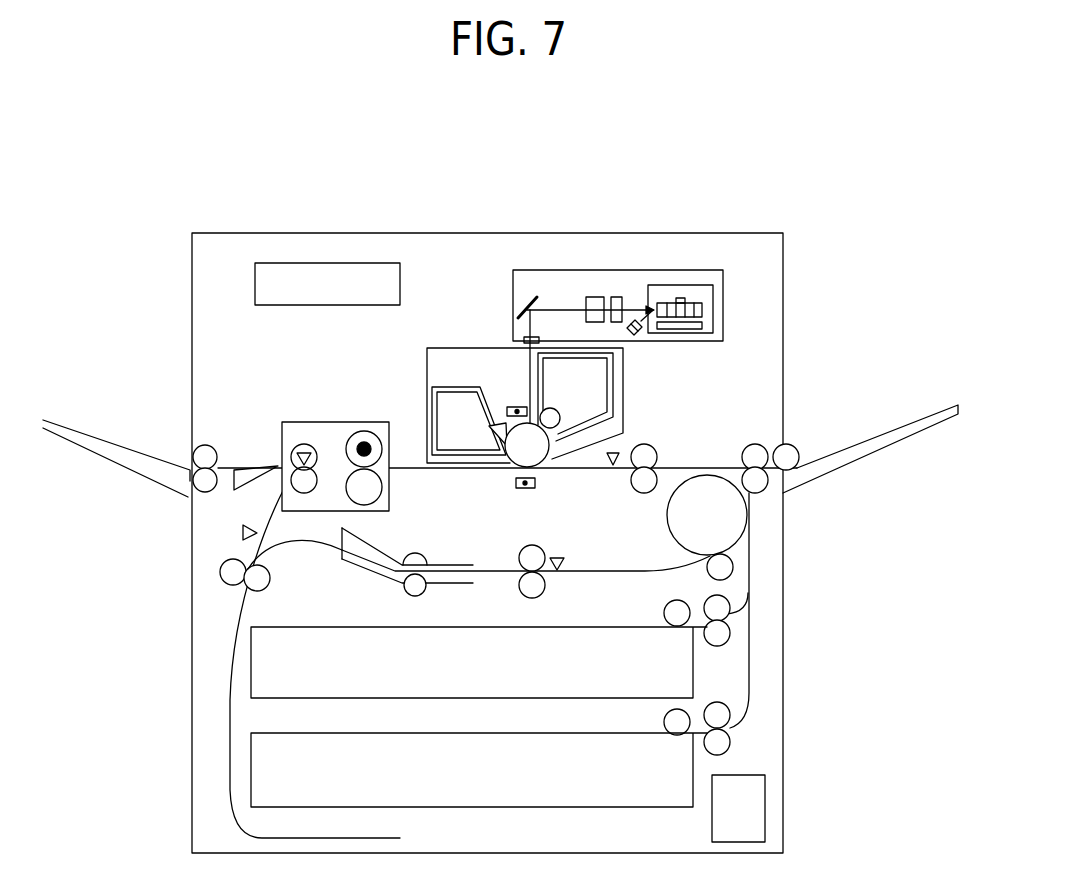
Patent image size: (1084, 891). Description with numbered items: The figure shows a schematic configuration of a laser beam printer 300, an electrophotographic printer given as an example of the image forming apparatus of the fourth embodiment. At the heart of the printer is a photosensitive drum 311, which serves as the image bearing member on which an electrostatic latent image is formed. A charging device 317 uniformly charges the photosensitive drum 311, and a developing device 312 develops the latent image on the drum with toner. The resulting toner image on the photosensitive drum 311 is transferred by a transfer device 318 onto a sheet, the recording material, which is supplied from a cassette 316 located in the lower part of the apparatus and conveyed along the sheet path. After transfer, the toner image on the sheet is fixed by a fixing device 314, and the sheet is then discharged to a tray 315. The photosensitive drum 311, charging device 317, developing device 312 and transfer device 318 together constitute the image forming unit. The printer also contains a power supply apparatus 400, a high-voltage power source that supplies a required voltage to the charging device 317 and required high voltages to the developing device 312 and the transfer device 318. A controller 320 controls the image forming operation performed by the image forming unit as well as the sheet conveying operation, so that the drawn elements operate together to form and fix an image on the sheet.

The laser beam printer 300 is at (672, 233).
The photosensitive drum 311 is at (537, 449).
The developing device 312 is at (552, 417).
The fixing device 314 is at (333, 422).
The tray 315 is at (103, 445).
The cassette 316 is at (675, 787).
The charging device 317 is at (520, 407).
The transfer device 318 is at (535, 483).
The controller 320 is at (305, 305).
The power supply apparatus 400 is at (712, 808).